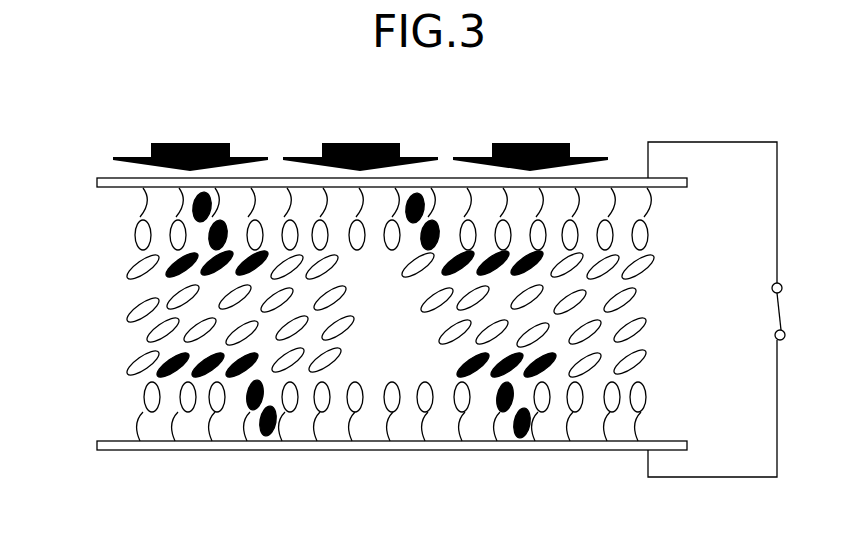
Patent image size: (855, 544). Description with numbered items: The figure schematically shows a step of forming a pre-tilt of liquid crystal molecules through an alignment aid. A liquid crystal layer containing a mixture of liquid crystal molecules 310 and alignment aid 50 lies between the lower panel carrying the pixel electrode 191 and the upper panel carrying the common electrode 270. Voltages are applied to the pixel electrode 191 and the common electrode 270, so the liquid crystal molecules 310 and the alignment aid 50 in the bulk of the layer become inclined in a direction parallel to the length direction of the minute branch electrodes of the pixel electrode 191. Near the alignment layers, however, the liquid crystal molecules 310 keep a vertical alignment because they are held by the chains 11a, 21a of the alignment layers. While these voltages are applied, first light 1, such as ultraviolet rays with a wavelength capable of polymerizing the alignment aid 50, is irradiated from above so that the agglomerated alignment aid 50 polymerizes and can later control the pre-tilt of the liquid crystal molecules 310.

The first light 1 is at (545, 143).
The chain of the alignment layer 21a is at (304, 188).
The chain of the alignment layer 11a is at (306, 451).
The common electrode 270 is at (118, 188).
The pixel electrode 191 is at (117, 440).
The liquid crystal molecules 310 is at (650, 265).
The alignment aid 50 is at (538, 275).